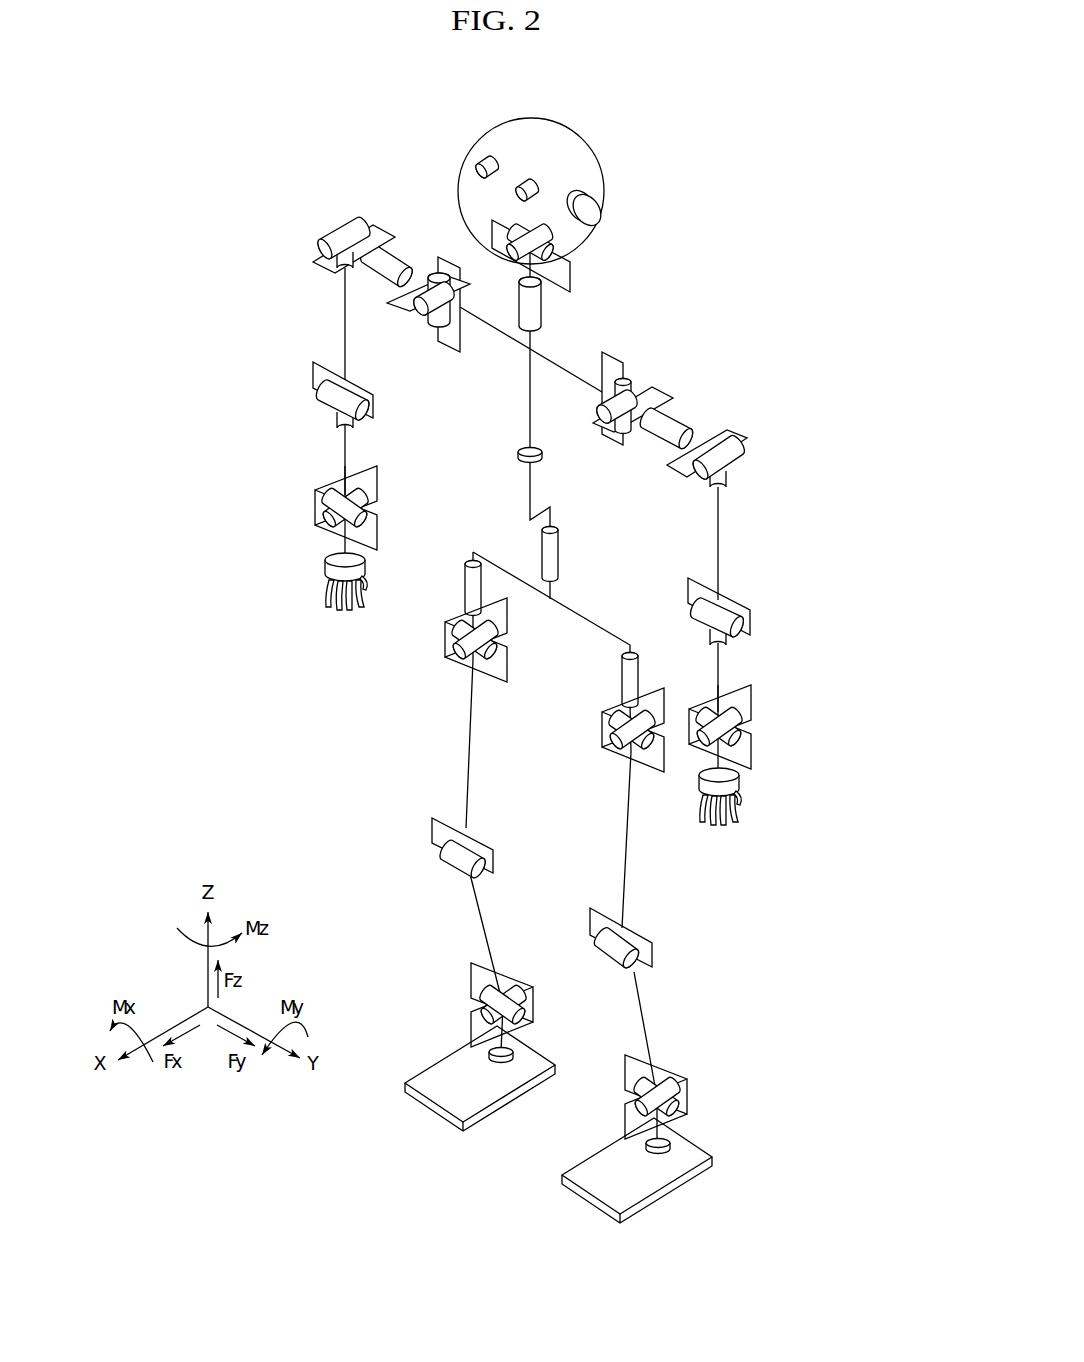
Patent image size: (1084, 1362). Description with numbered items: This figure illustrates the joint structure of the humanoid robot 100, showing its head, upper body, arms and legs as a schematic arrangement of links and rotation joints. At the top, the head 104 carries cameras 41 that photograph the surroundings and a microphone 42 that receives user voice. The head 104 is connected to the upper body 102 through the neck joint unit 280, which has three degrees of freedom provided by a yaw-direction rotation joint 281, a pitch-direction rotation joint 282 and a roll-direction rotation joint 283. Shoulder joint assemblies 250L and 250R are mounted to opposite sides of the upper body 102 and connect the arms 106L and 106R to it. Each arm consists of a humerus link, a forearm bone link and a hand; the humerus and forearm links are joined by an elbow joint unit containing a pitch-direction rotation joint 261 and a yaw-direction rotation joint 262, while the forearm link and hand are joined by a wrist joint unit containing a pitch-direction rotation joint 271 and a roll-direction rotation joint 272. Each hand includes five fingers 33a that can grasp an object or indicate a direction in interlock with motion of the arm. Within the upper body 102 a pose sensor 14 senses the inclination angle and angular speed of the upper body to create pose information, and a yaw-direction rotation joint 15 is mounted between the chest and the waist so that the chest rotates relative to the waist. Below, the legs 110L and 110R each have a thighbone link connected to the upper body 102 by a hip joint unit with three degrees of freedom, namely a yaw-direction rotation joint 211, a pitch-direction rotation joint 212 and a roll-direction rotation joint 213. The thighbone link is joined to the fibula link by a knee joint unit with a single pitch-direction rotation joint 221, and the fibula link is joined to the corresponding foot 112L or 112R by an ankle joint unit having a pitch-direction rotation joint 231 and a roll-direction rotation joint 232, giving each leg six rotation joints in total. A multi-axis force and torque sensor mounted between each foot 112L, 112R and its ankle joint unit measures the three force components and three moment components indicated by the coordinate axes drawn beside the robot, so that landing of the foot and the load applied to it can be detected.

The humanoid robot 100 is at (810, 128).
The upper body 102 is at (528, 400).
The head 104 is at (600, 142).
The cameras 41 is at (513, 196).
The microphone 42 is at (596, 206).
The neck joint unit 280 is at (549, 258).
The rotation joint of a yaw direction 281 is at (540, 306).
The rotation joint of a pitch direction 282 is at (560, 246).
The rotation joint of a roll direction 283 is at (505, 246).
The shoulder joint assembly 250R is at (342, 216).
The shoulder joint assembly 250L is at (684, 385).
The arm 106R is at (236, 380).
The arm 106L is at (806, 588).
The fingers 33a is at (340, 600).
The rotation joint of a pitch direction 261 is at (345, 392).
The rotation joint of a yaw direction 262 is at (352, 422).
The rotation joint of a pitch direction 271 is at (370, 516).
The rotation joint of a roll direction 272 is at (368, 494).
The pose sensor 14 is at (540, 458).
The rotation joint of a yaw direction 15 is at (558, 560).
The leg 110R is at (370, 790).
The leg 110L is at (689, 885).
The rotation joint of a yaw direction 211 is at (468, 580).
The rotation joint of a pitch direction 212 is at (497, 650).
The rotation joint of a roll direction 213 is at (455, 660).
The rotation joint of a pitch direction 221 is at (466, 845).
The rotation joint of a pitch direction 231 is at (528, 1015).
The rotation joint of a roll direction 232 is at (515, 995).
The foot 112R is at (432, 1105).
The foot 112L is at (585, 1190).